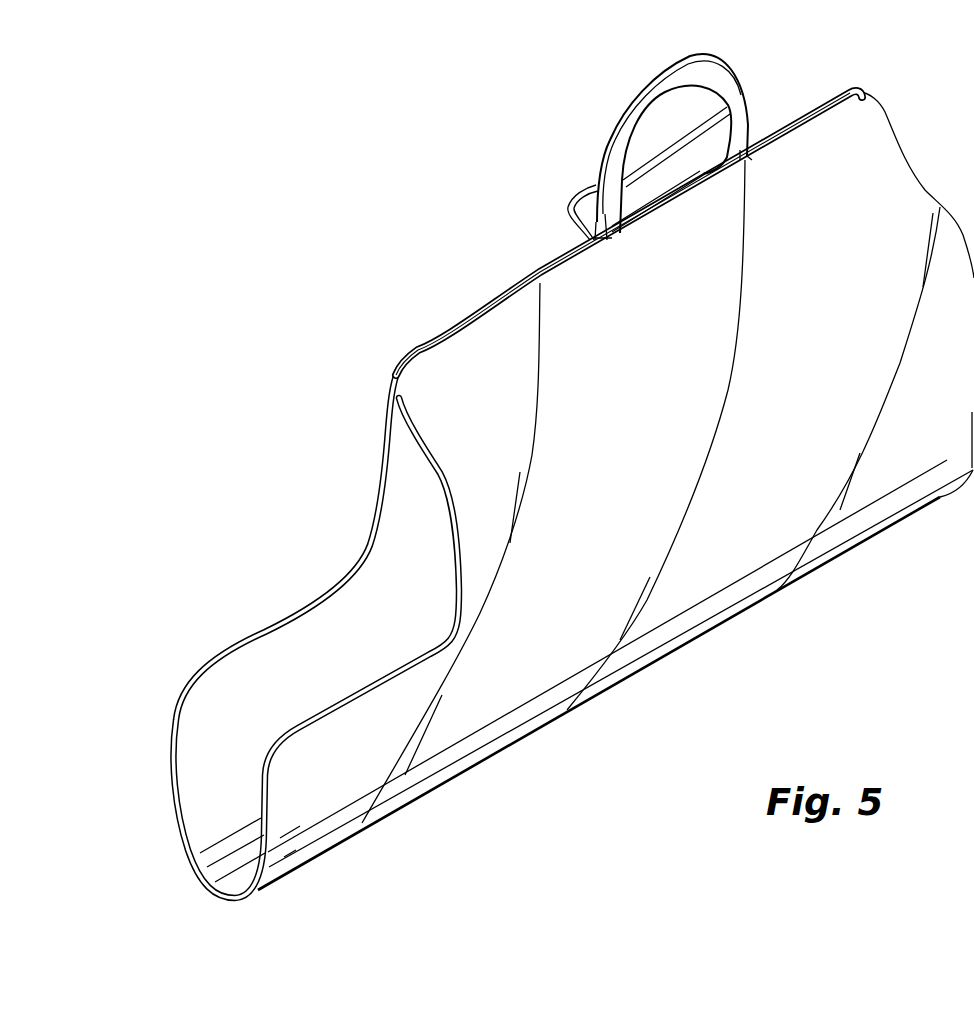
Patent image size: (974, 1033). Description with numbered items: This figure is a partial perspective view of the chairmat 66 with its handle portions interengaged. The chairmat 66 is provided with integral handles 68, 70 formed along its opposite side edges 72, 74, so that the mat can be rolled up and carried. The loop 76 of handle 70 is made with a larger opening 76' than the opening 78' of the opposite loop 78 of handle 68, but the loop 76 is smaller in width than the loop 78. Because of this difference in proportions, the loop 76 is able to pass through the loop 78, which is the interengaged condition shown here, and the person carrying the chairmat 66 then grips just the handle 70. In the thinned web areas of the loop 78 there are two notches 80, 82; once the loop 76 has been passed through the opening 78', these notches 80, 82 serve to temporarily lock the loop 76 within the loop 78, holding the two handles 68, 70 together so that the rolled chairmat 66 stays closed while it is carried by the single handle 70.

The chairmat 66 is at (360, 423).
The handle 68 is at (560, 203).
The handle 70 is at (752, 72).
The side edge 72 is at (540, 283).
The side edge 74 is at (494, 298).
The loop 76 is at (648, 137).
The opening 76' is at (671, 135).
The loop 78 is at (685, 169).
The opening 78' is at (669, 226).
The notch 80 is at (608, 240).
The notch 82 is at (746, 156).